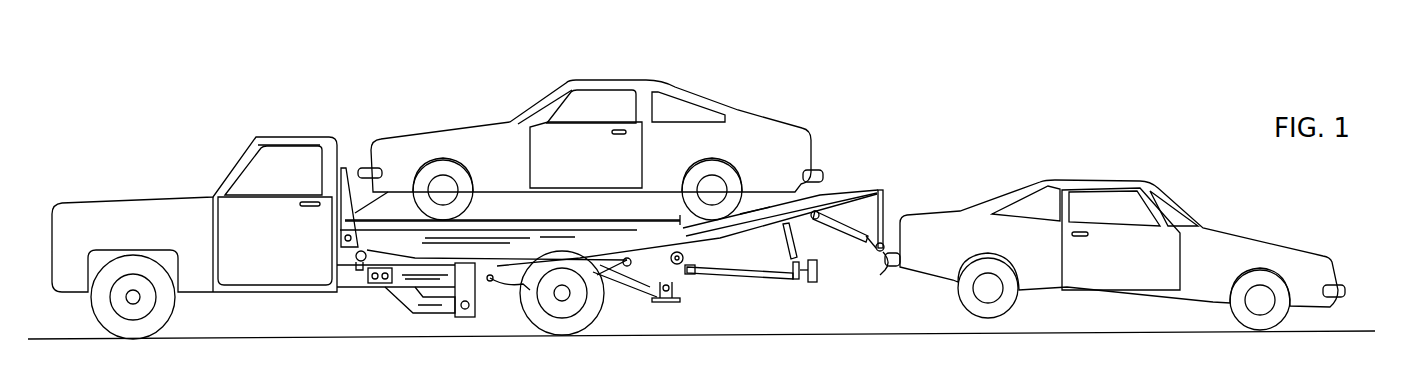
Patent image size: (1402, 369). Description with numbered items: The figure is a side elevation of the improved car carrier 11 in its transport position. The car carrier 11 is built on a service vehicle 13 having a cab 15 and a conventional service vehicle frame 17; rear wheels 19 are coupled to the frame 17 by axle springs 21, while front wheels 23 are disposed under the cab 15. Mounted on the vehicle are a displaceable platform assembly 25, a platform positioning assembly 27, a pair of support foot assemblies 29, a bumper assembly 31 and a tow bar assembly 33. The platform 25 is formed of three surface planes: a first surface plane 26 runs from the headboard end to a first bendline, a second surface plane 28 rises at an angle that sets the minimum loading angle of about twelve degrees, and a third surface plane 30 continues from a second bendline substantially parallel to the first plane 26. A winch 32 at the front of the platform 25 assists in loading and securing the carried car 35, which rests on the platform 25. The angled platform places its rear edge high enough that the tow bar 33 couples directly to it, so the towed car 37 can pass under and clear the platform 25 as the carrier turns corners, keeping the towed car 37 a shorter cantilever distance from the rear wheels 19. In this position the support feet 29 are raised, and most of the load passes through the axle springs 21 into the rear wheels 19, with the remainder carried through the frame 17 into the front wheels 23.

The car carrier 11 is at (204, 152).
The service vehicle 13 is at (341, 143).
The cab 15 is at (283, 168).
The service vehicle frame 17 is at (352, 283).
The rear wheels 19 is at (590, 310).
The axle springs 21 is at (508, 287).
The front wheels 23 is at (165, 312).
The displaceable platform assembly 25 is at (788, 195).
The first surface plane 26 is at (493, 222).
The platform positioning assembly 27 is at (385, 295).
The second surface plane 28 is at (758, 207).
The support foot assemblies 29 is at (637, 297).
The third surface plane 30 is at (845, 192).
The bumper assembly 31 is at (719, 285).
The winch 32 is at (367, 225).
The tow bar assembly 33 is at (894, 207).
The carried car 35 is at (736, 94).
The towed car 37 is at (1196, 202).